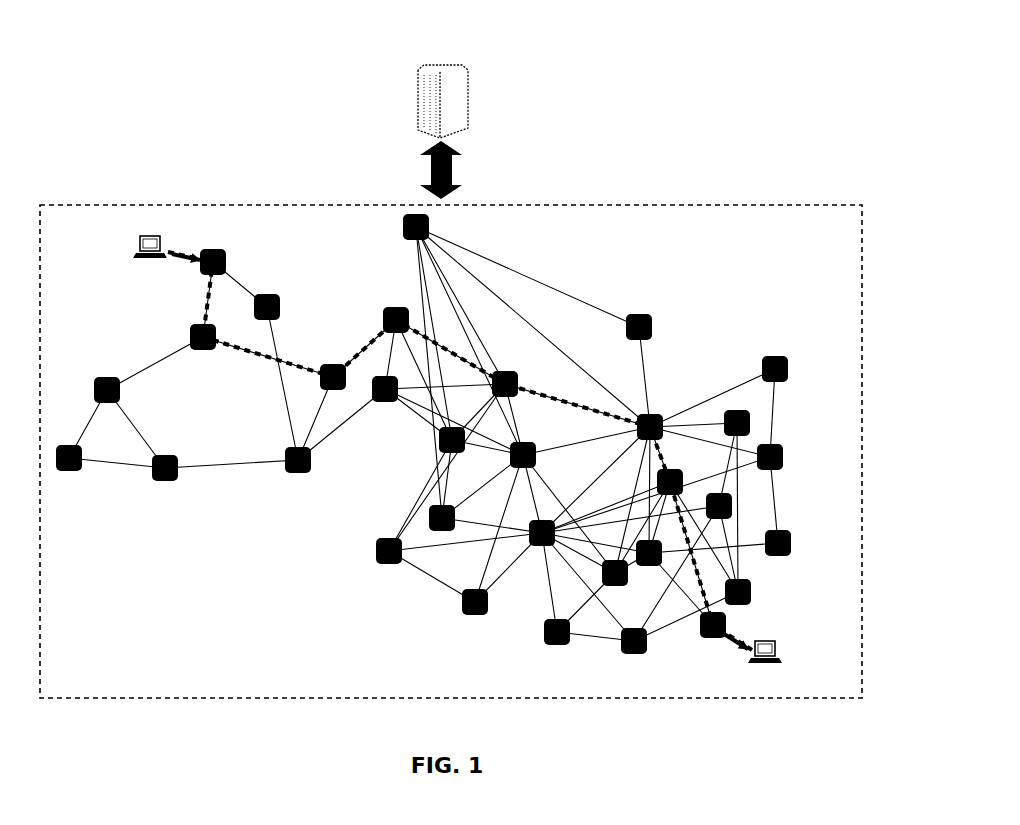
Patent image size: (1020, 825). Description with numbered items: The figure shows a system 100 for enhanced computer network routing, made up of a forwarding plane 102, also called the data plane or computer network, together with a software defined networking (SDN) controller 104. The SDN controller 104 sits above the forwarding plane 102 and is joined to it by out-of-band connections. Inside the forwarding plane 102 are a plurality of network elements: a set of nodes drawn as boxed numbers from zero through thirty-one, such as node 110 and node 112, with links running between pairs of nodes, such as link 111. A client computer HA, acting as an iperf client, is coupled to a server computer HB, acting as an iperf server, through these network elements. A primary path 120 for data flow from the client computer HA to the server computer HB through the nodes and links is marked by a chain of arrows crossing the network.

The system 100 is at (679, 28).
The forwarding plane 102 is at (765, 205).
The software defined networking (SDN) controller 104 is at (433, 67).
The node 110 is at (657, 417).
The link 111 is at (713, 397).
The node 112 is at (777, 354).
The primary path 120 is at (243, 365).